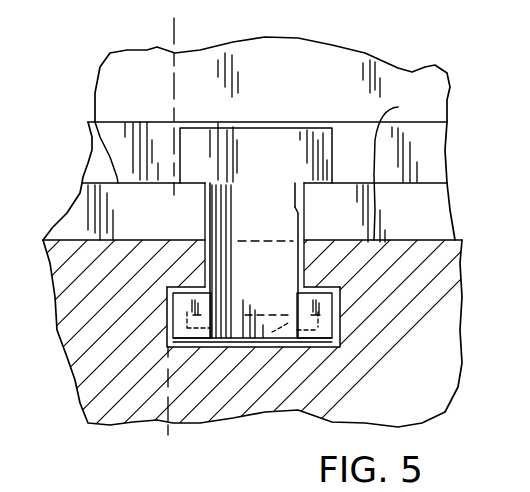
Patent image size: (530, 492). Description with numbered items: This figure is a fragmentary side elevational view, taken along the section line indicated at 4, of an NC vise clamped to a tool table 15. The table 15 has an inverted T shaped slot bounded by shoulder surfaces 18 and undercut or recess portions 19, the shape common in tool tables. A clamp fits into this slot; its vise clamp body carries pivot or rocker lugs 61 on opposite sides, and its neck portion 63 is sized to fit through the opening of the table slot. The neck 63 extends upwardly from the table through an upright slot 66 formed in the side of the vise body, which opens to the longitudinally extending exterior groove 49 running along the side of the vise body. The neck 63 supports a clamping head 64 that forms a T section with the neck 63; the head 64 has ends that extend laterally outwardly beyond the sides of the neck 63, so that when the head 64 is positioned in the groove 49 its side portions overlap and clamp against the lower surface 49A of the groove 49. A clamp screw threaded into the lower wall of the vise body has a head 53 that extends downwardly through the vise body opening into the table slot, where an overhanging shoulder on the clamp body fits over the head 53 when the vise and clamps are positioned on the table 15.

The section line 4- 4 is at (163, 27).
The table 15 is at (414, 377).
The shoulder surfaces 18 is at (197, 286).
The undercut or recess portions 19 is at (337, 322).
The exterior grooves 49 is at (437, 168).
The lower surface of the slot 49A is at (95, 110).
The head of clamp screw 53 is at (253, 357).
The pivot or rocker lugs 61 is at (186, 309).
The neck portion 63 is at (248, 212).
The clamping head 64 is at (263, 127).
The upright slot 66 is at (298, 195).